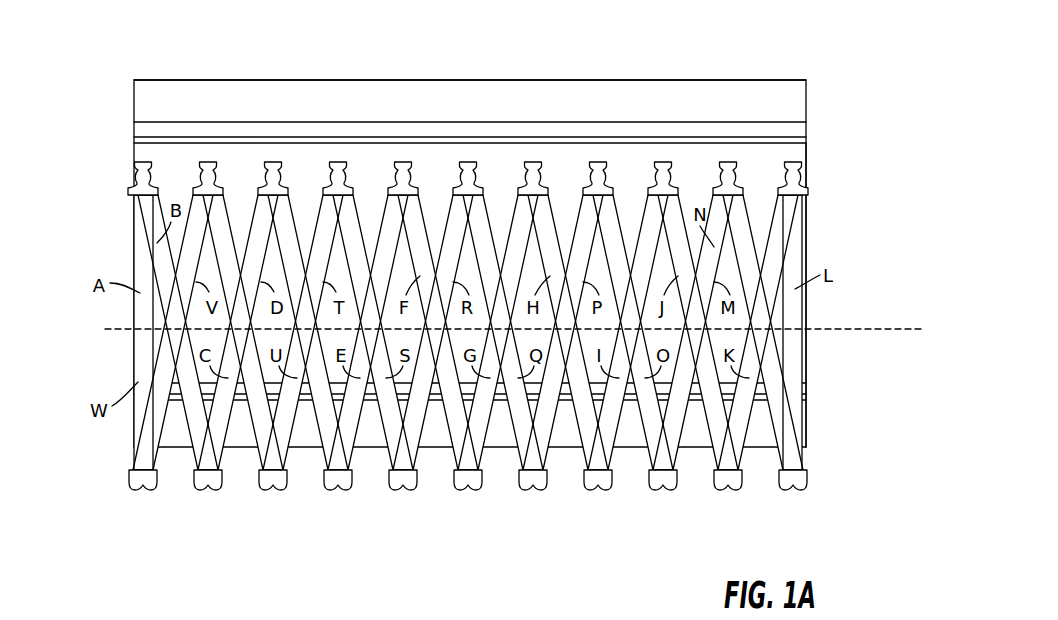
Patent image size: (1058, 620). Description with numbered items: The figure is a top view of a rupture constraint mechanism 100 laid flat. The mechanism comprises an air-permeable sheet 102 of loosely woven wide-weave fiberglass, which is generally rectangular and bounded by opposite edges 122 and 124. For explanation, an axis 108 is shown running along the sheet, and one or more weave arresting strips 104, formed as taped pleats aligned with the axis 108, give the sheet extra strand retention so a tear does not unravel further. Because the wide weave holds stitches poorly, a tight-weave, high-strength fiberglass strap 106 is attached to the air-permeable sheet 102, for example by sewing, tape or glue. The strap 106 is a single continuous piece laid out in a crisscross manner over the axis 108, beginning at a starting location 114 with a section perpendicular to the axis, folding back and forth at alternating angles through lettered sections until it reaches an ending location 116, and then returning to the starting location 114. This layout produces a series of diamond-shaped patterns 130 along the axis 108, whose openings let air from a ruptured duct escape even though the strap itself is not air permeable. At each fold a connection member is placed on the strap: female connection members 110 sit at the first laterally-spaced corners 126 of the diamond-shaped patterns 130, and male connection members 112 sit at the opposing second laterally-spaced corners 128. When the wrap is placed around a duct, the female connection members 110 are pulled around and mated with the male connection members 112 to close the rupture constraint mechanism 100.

The rupture constraint mechanism 100 is at (842, 86).
The air-permeable sheet 102 is at (795, 154).
The weave arresting strip 104 is at (795, 135).
The strap 106 is at (806, 311).
The axis 108 is at (534, 331).
The female connection member 110 is at (469, 515).
The male connection member 112 is at (441, 113).
The starting location 114 is at (126, 338).
The ending location 116 is at (814, 341).
The edge 122 is at (567, 449).
The edge 124 is at (600, 80).
The first laterally-spaced corner 126 is at (290, 473).
The second laterally-spaced corner 128 is at (293, 187).
The diamond-shaped pattern 130 is at (376, 194).